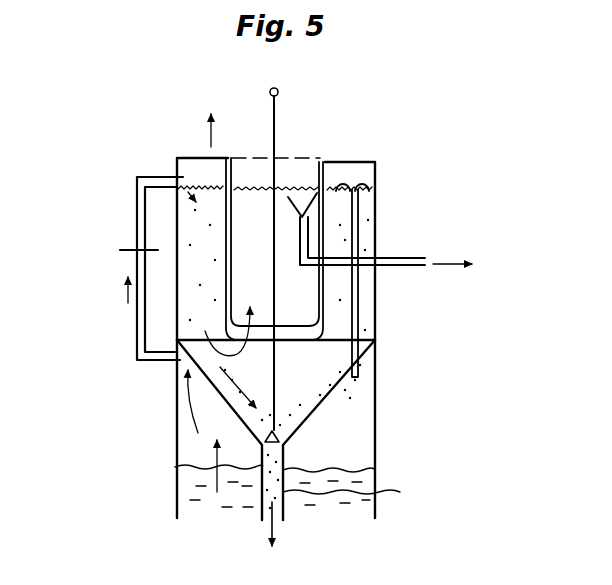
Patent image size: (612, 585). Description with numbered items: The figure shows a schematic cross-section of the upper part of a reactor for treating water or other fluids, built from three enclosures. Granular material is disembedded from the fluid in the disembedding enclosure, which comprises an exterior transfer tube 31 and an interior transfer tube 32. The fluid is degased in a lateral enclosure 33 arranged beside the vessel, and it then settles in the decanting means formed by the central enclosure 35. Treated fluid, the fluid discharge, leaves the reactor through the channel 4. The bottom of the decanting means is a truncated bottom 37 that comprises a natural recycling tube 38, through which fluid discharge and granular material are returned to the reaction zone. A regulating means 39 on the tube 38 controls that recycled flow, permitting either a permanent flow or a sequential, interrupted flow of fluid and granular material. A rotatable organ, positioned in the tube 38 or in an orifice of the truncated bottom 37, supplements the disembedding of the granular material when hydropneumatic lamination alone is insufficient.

The channel 4 is at (403, 258).
The exterior transfer tube 31 is at (137, 202).
The interior transfer tube 32 is at (372, 222).
The lateral enclosure 33 is at (203, 268).
The central enclosure 35 is at (308, 298).
The truncated bottom 37 is at (318, 410).
The natural recycling tube 38 is at (375, 492).
The regulating means 39 is at (258, 432).